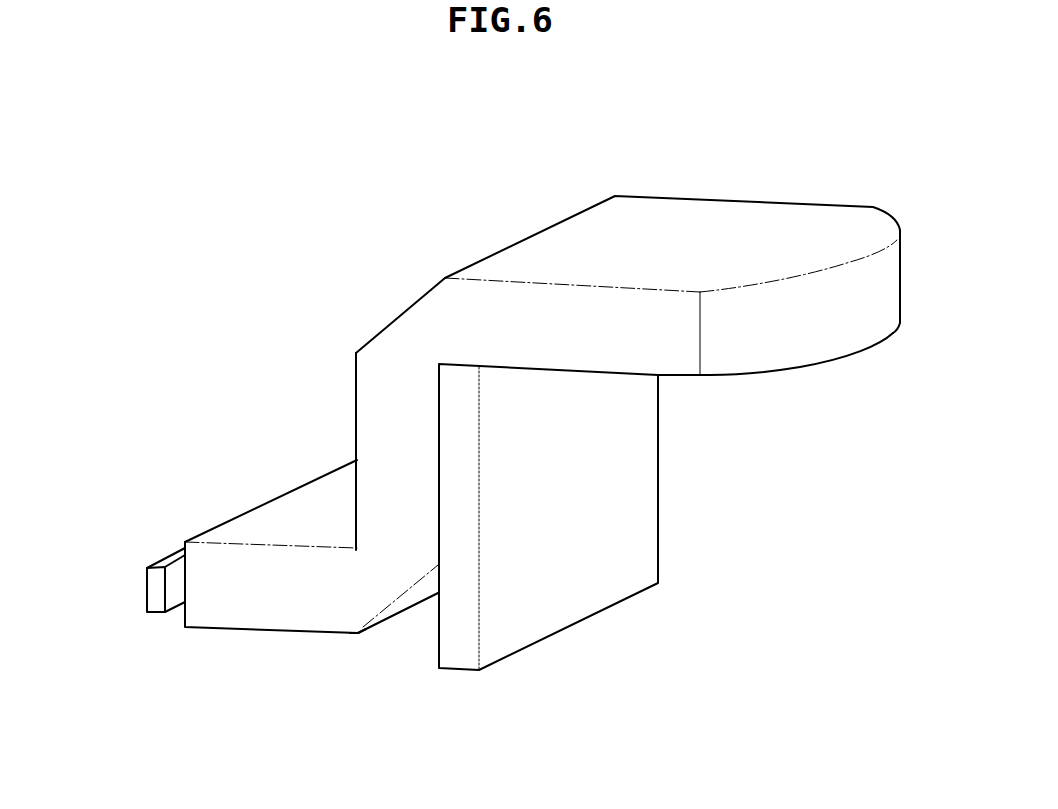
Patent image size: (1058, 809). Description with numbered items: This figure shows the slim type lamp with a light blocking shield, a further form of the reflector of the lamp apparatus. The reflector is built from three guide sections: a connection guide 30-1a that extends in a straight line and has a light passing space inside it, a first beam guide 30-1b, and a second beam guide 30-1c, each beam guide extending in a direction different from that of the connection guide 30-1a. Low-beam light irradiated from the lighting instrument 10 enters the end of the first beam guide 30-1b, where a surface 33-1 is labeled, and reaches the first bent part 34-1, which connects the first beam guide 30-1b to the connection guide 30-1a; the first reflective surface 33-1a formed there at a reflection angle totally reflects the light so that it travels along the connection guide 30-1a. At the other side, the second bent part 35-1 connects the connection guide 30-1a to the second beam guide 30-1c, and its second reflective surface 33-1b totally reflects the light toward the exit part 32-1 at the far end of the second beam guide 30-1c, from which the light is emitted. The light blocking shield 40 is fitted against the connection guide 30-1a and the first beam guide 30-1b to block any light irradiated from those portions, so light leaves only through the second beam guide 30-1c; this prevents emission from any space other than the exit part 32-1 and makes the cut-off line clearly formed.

The lighting instrument 10 is at (165, 567).
The connection guide 30-1a is at (380, 450).
The first beam guide 30-1b is at (278, 602).
The second beam guide 30-1c is at (727, 217).
The exit part 32-1 is at (843, 332).
The end face 33-1 is at (185, 613).
The first reflective surface 33-1a is at (410, 598).
The second reflective surface 33-1b is at (410, 307).
The first bent part 34-1 is at (370, 588).
The second bent part 35-1 is at (412, 345).
The light blocking shield 40 is at (640, 518).